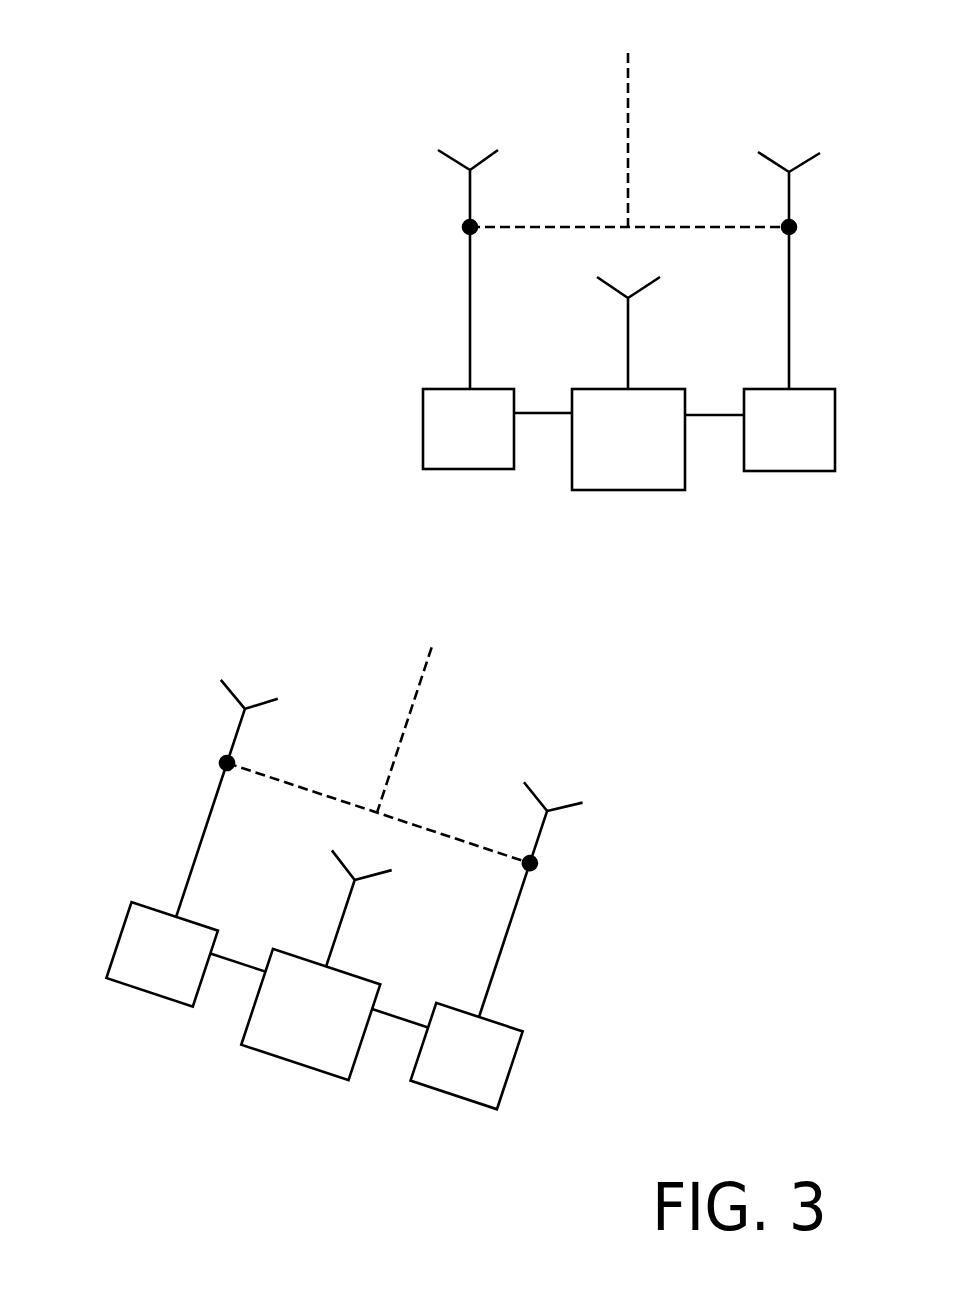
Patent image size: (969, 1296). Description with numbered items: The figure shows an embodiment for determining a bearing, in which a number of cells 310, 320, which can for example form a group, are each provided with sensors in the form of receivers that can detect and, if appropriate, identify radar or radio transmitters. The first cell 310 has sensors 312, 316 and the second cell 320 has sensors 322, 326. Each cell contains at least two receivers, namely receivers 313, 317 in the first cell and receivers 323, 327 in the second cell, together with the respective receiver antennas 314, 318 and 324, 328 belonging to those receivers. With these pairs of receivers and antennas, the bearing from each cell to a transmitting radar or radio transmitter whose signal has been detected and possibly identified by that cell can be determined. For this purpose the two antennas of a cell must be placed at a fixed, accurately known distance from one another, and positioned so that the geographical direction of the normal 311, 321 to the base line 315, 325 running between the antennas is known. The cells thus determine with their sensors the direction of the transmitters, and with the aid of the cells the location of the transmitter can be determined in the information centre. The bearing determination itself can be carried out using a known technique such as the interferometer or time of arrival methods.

The cell 310 is at (612, 309).
The normal 311 is at (628, 95).
The sensor 312 is at (458, 325).
The receiver 313 is at (423, 428).
The receiver antenna 314 is at (468, 203).
The base line 315 is at (675, 227).
The sensor 316 is at (798, 332).
The receiver 317 is at (835, 427).
The receiver antenna 318 is at (791, 202).
The cell 320 is at (358, 909).
The normal 321 is at (422, 685).
The sensor 322 is at (185, 852).
The receiver 323 is at (120, 938).
The receiver antenna 324 is at (232, 738).
The base line 325 is at (422, 825).
The sensor 326 is at (505, 965).
The receiver 327 is at (513, 1065).
The receiver antenna 328 is at (539, 838).